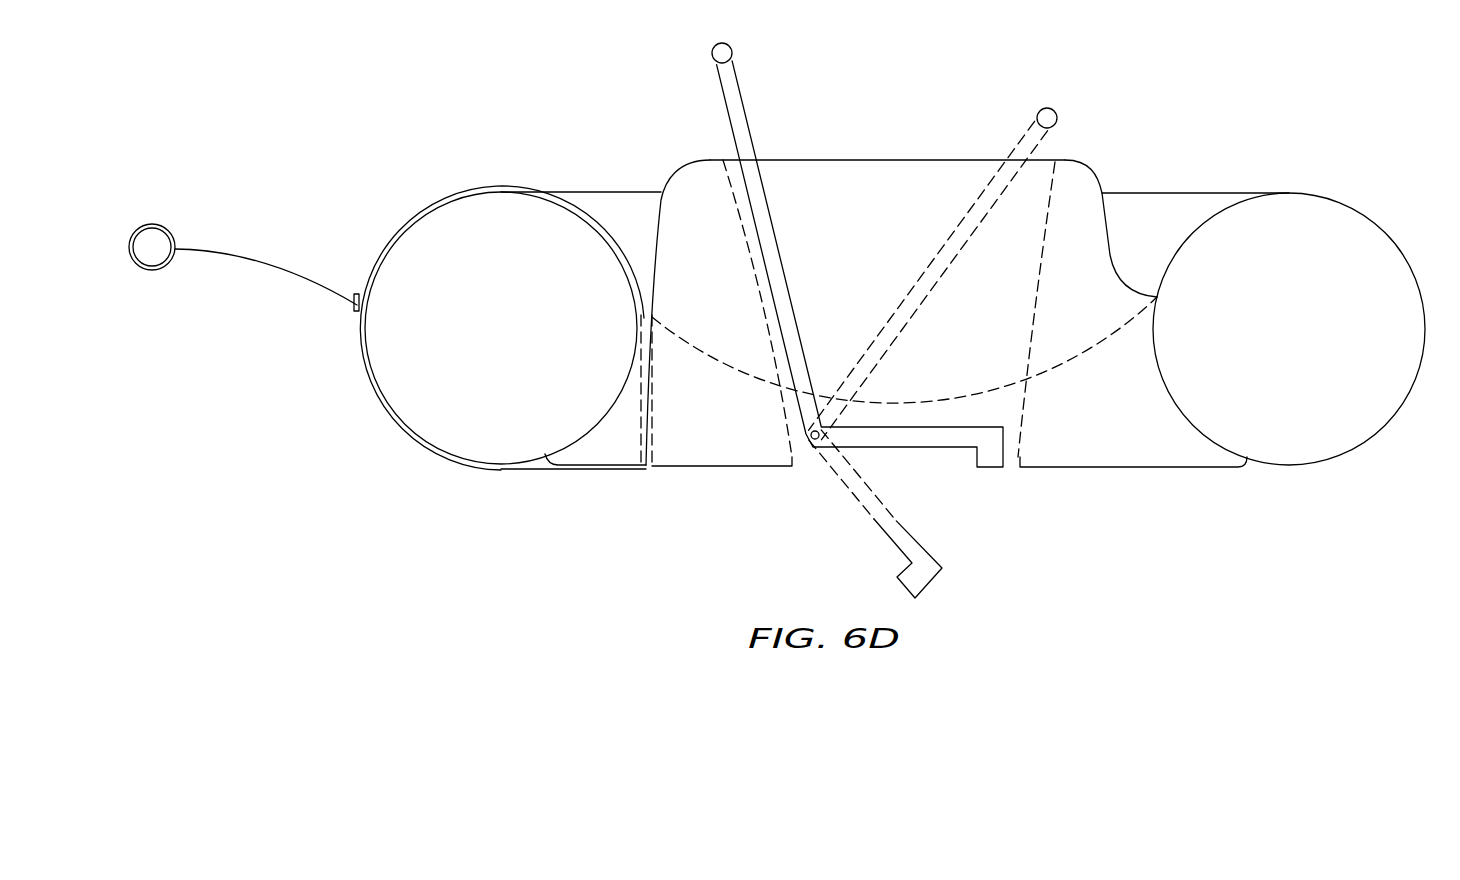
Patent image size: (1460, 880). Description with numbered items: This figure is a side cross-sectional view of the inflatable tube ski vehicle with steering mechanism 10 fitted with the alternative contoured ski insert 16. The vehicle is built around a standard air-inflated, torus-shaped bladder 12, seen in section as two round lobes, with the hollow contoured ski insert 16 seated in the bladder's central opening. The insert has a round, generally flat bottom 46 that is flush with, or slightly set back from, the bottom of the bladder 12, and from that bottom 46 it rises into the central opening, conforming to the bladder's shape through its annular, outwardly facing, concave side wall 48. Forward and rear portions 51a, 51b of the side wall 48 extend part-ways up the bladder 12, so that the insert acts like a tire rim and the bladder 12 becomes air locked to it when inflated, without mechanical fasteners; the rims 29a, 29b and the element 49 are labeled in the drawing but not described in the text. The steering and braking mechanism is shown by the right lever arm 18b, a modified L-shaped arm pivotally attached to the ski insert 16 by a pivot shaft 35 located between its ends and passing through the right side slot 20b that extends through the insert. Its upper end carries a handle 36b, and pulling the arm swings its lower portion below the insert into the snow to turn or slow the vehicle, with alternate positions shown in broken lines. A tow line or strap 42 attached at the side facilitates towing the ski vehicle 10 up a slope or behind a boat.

The inflatable tube ski vehicle with steering mechanism 10 is at (494, 98).
The bladder 12 is at (1393, 403).
The contoured ski insert 16 is at (685, 457).
The right lever arm 18b is at (740, 107).
The right side slot 20b is at (1003, 410).
The first wheel rim 29a is at (376, 404).
The second wheel rim 29b is at (1375, 220).
The pivot shaft 35 is at (841, 421).
The handle 36b is at (731, 50).
The tow line or strap 42 is at (229, 252).
The bottom 46 is at (747, 469).
The side wall 48 is at (1174, 357).
The ring 49 is at (160, 225).
The forward portion of side wall 51a is at (609, 402).
The rear portion of side wall 51b is at (1198, 422).